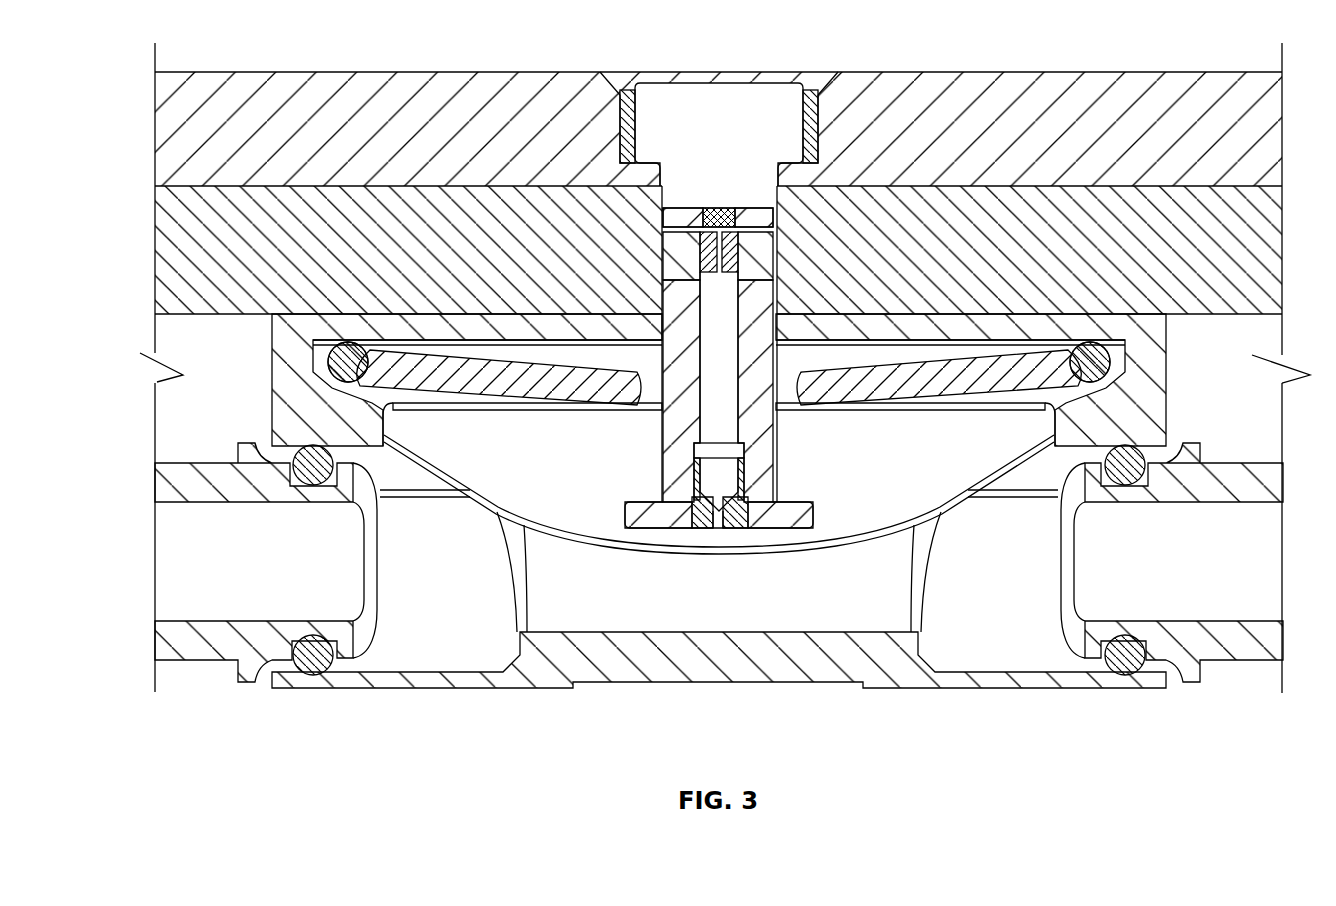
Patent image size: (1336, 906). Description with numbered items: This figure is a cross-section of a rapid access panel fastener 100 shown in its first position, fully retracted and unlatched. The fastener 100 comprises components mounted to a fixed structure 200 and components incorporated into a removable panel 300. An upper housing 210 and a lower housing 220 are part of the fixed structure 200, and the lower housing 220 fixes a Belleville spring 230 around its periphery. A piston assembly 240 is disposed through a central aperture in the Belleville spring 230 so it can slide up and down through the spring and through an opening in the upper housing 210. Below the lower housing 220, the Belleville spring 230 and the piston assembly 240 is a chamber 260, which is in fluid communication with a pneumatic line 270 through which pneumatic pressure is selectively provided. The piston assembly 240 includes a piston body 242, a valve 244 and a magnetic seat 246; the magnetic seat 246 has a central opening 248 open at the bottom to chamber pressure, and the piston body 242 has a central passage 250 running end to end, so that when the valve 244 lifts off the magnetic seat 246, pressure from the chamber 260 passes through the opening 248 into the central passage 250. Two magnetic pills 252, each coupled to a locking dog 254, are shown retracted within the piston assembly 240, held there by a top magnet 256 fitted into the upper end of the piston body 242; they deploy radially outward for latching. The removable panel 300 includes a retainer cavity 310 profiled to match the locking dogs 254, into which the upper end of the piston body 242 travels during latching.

The fastener 100 is at (830, 48).
The fixed structure 200 is at (144, 690).
The upper housing 210 is at (254, 298).
The lower housing 220 is at (1160, 413).
The Belleville spring 230 is at (493, 388).
The piston assembly 240 is at (658, 426).
The piston body 242 is at (770, 448).
The valve 244 is at (745, 490).
The magnetic seat 246 is at (696, 530).
The central opening 248 is at (722, 530).
The central passage 250 is at (713, 415).
The magnetic pills 252 is at (672, 247).
The locking dogs 254 is at (767, 243).
The top magnet 256 is at (717, 208).
The chamber 260 is at (892, 474).
The pneumatic line 270 is at (1160, 571).
The removable panel 300 is at (144, 72).
The retainer cavity 310 is at (622, 80).